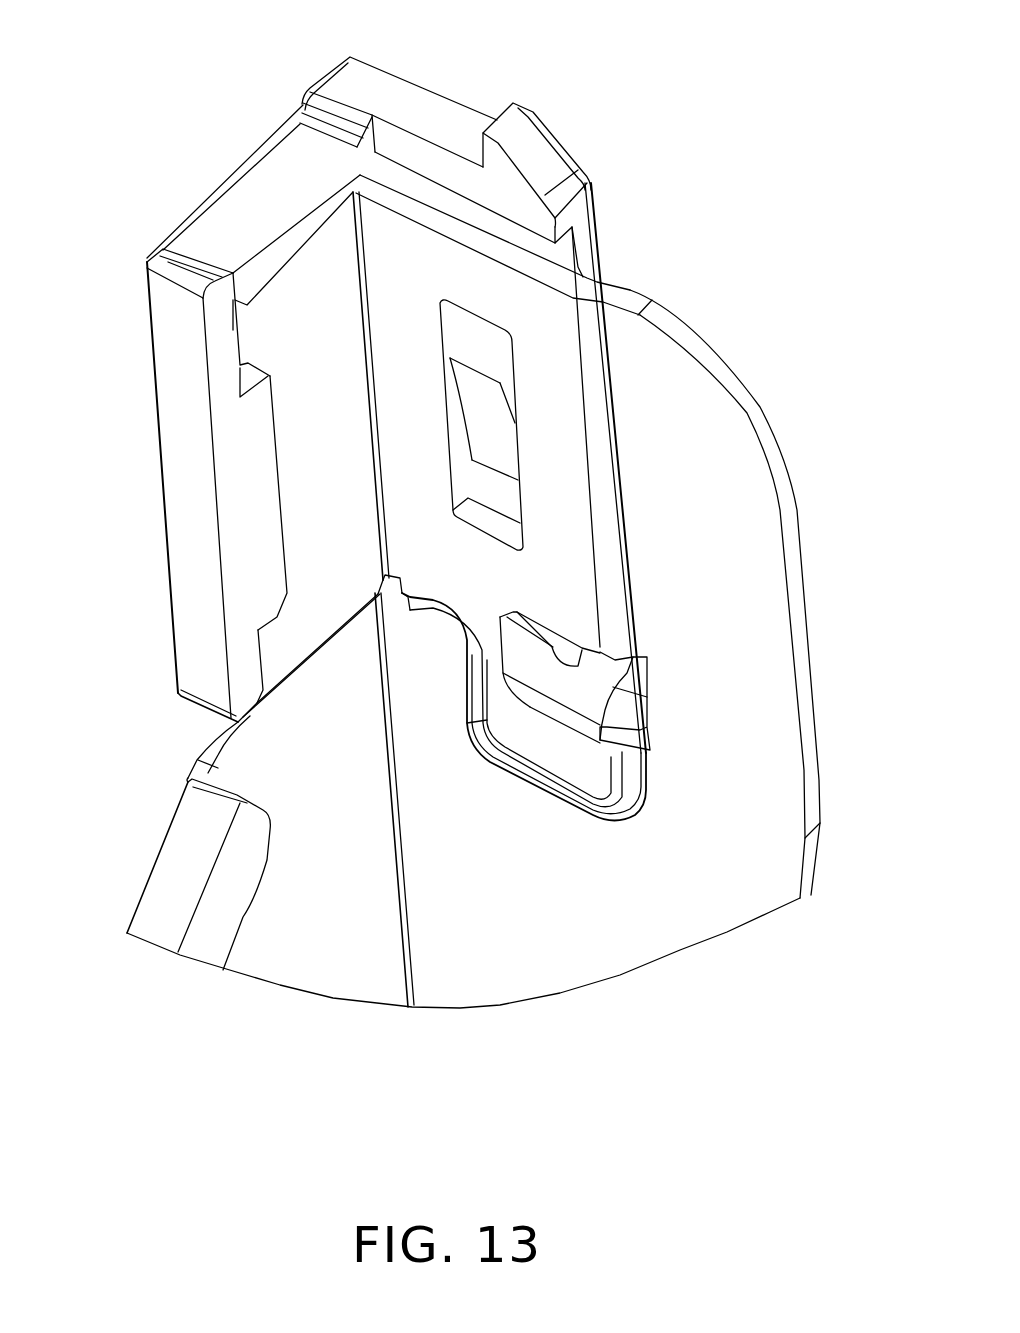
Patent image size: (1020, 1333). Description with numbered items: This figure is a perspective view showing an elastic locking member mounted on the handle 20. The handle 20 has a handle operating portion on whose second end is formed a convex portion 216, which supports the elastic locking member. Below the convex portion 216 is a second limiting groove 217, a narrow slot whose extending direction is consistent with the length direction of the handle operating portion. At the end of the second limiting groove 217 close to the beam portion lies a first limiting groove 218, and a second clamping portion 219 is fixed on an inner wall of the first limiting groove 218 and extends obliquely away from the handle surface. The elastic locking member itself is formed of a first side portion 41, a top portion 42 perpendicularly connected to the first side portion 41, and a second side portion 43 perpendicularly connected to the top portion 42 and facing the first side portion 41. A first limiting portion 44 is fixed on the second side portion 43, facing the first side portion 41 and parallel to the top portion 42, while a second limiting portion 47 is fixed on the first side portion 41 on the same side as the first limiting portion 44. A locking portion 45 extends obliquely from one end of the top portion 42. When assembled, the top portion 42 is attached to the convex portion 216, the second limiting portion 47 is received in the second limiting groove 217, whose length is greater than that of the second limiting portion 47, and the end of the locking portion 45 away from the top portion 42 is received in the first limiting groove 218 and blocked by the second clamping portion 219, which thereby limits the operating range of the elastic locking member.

The handle 20 is at (387, 282).
The first side portion 41 is at (404, 103).
The top portion 42 is at (267, 195).
The second side portion 43 is at (200, 588).
The first limiting portion 44 is at (260, 420).
The locking portion 45 is at (570, 648).
The second limiting portion 47 is at (465, 338).
The convex portion 216 is at (300, 422).
The second limiting groove 217 is at (498, 503).
The first limiting groove 218 is at (636, 708).
The second clamping portion 219 is at (570, 698).